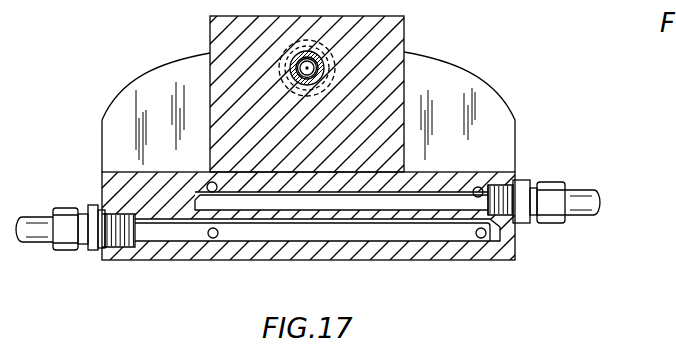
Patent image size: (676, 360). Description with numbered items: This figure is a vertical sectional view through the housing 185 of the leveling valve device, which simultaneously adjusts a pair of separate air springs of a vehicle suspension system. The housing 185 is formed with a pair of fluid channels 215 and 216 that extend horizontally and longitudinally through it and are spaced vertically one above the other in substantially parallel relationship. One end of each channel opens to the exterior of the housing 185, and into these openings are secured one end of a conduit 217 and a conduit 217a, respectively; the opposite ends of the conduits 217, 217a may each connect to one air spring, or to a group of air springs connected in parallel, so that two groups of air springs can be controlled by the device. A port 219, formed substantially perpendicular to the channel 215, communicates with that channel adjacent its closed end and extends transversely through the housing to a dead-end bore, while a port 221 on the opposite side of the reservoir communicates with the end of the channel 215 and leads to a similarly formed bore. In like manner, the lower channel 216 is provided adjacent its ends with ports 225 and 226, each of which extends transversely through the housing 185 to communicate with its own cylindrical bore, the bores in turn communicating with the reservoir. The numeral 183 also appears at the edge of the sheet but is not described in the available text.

The housing 185 is at (500, 85).
The fluid channel 215 is at (318, 197).
The fluid channel 216 is at (348, 228).
The port 219 is at (211, 182).
The port 221 is at (478, 187).
The port 225 is at (208, 238).
The port 226 is at (475, 242).
The conduit 217 is at (582, 217).
The conduit 217a is at (37, 244).
The element of adjacent figure 183 is at (562, 5).